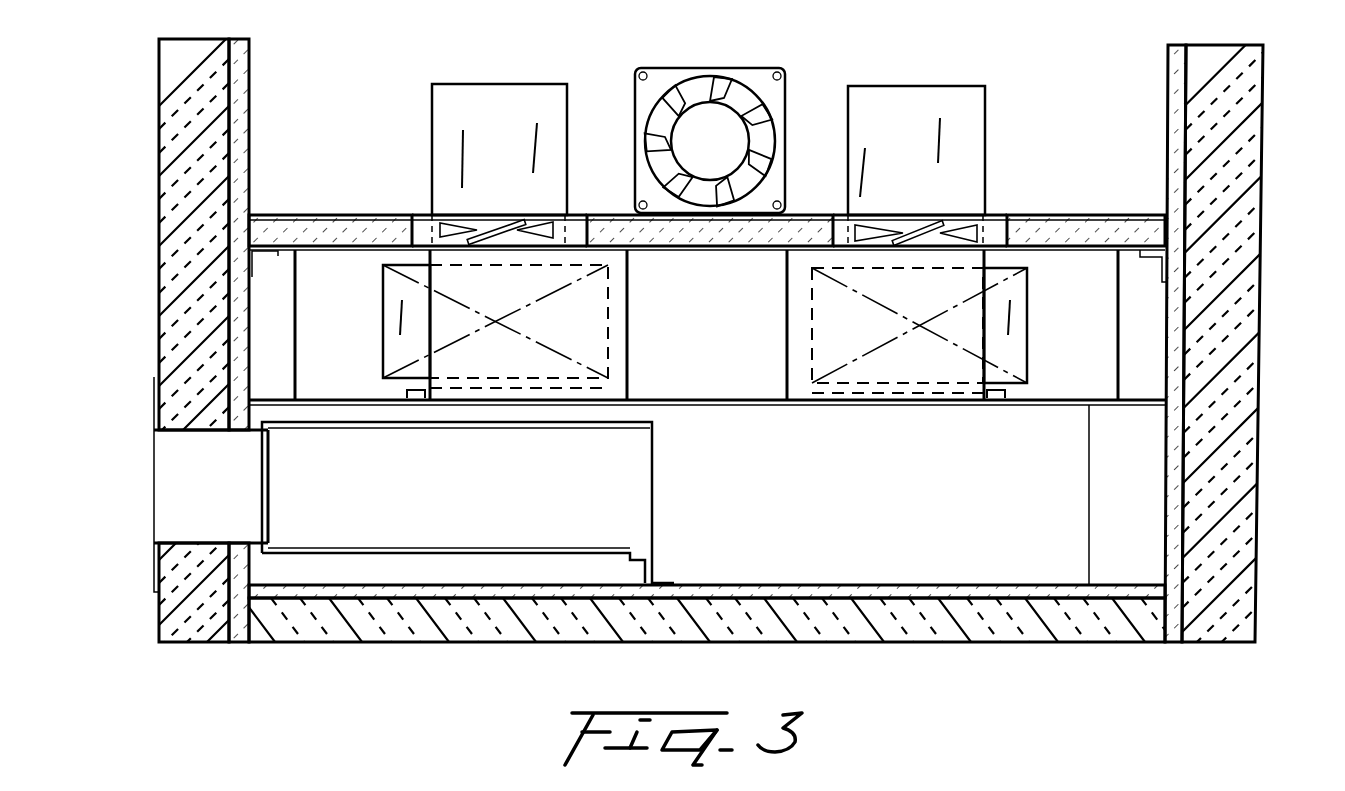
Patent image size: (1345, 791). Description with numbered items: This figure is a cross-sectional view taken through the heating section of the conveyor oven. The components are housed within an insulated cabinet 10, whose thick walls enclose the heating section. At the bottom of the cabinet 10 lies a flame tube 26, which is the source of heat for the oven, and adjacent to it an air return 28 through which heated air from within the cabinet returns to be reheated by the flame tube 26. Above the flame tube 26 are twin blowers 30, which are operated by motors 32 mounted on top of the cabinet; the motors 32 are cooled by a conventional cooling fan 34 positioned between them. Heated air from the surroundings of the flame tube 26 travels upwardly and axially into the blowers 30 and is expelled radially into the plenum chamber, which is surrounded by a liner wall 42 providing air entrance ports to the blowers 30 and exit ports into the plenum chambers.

The insulated cabinet 10 is at (1256, 295).
The flame tube 26 is at (655, 466).
The air return 28 is at (890, 524).
The twin blowers 30 is at (383, 291).
The motors 32 is at (432, 113).
The cooling fan 34 is at (785, 83).
The liner wall 42 is at (353, 398).